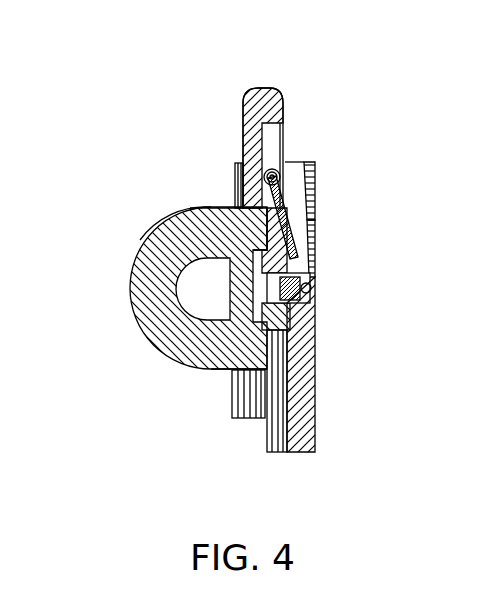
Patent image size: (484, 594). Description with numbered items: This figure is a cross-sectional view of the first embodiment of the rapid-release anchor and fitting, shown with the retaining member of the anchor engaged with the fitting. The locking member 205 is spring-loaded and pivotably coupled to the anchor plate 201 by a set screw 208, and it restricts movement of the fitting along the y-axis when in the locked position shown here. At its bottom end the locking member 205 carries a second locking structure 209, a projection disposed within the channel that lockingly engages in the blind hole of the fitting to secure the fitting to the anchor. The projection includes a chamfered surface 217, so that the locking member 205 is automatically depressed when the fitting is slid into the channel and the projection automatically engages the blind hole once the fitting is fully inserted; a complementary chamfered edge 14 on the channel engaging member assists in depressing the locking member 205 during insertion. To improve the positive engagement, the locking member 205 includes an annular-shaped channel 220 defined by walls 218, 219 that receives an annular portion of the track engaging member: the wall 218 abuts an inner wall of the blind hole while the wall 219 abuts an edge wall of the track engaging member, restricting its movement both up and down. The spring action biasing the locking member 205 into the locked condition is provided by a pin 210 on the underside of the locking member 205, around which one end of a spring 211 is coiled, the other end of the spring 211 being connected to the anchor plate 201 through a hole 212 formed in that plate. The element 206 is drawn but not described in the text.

The chamfered edge 14 is at (300, 370).
The anchor plate 201 is at (267, 217).
The locking member 205 is at (248, 92).
The lower strip 206 is at (258, 405).
The set screw 208 is at (312, 291).
The second locking structure 209 is at (290, 348).
The pin 210 is at (285, 165).
The spring 211 is at (307, 183).
The hole 212 is at (312, 245).
The chamfered surface 217 is at (262, 305).
The wall 218 is at (165, 228).
The wall 219 is at (243, 196).
The annular-shaped channel 220 is at (205, 213).